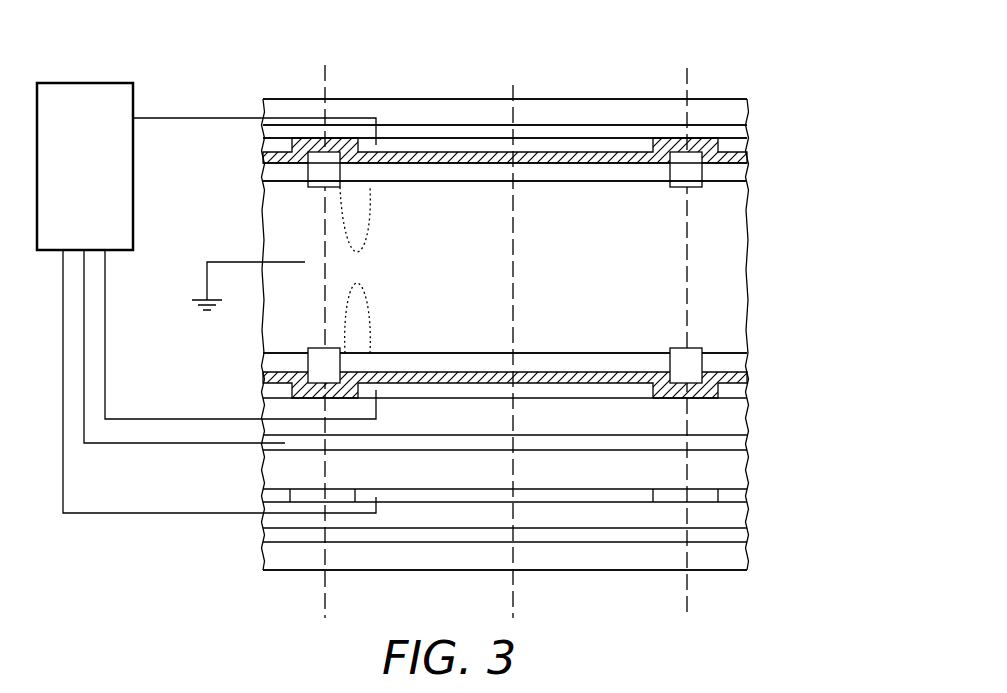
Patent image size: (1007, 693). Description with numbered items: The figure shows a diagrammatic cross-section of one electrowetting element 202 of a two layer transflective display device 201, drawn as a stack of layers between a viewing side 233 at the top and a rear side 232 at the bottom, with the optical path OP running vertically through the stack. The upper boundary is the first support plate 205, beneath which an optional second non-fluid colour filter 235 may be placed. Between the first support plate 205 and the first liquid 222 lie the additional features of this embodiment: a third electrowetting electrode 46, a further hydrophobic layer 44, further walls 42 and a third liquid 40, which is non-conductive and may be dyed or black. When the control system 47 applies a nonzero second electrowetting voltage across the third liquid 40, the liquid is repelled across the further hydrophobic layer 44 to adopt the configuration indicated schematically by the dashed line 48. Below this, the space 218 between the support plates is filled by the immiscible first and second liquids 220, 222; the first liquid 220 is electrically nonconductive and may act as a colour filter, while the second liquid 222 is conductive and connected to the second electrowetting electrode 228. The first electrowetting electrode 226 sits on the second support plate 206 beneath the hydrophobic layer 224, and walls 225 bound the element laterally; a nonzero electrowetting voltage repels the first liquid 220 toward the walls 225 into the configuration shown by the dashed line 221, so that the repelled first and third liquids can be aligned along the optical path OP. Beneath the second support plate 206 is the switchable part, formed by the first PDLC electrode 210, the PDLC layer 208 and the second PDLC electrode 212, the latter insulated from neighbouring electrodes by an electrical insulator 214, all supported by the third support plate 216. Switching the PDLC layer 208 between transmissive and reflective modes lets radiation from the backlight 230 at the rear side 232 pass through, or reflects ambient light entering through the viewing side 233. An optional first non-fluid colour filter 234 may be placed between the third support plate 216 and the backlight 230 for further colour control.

The display device 201 is at (792, 74).
The electrowetting element 202 is at (423, 93).
The first support plate 205 is at (733, 108).
The second support plate 206 is at (740, 415).
The PDLC layer 208 is at (740, 470).
The first PDLC electrode 210 is at (740, 443).
The second PDLC electrode 212 is at (402, 497).
The electrical insulator 214 is at (673, 497).
The third support plate 216 is at (740, 515).
The space 218 is at (563, 197).
The first liquid 220 is at (655, 363).
The dashed line 221 is at (382, 310).
The second liquid 222 is at (733, 272).
The hydrophobic layer 224 is at (588, 382).
The walls 225 is at (322, 358).
The first electrowetting electrode 226 is at (457, 392).
The second electrowetting electrode 228 is at (206, 278).
The backlight 230 is at (740, 555).
The rear side 232 is at (620, 570).
The viewing side 233 is at (640, 99).
The first non-fluid colour filter 234 is at (275, 535).
The second non-fluid colour filter 235 is at (733, 130).
The third liquid 40 is at (652, 172).
The further walls 42 is at (317, 188).
The further hydrophobic layer 44 is at (490, 158).
The third electrowetting electrode 46 is at (437, 145).
The control system 47 is at (98, 178).
The dashed line 48 is at (368, 225).
The optical path OP is at (514, 62).